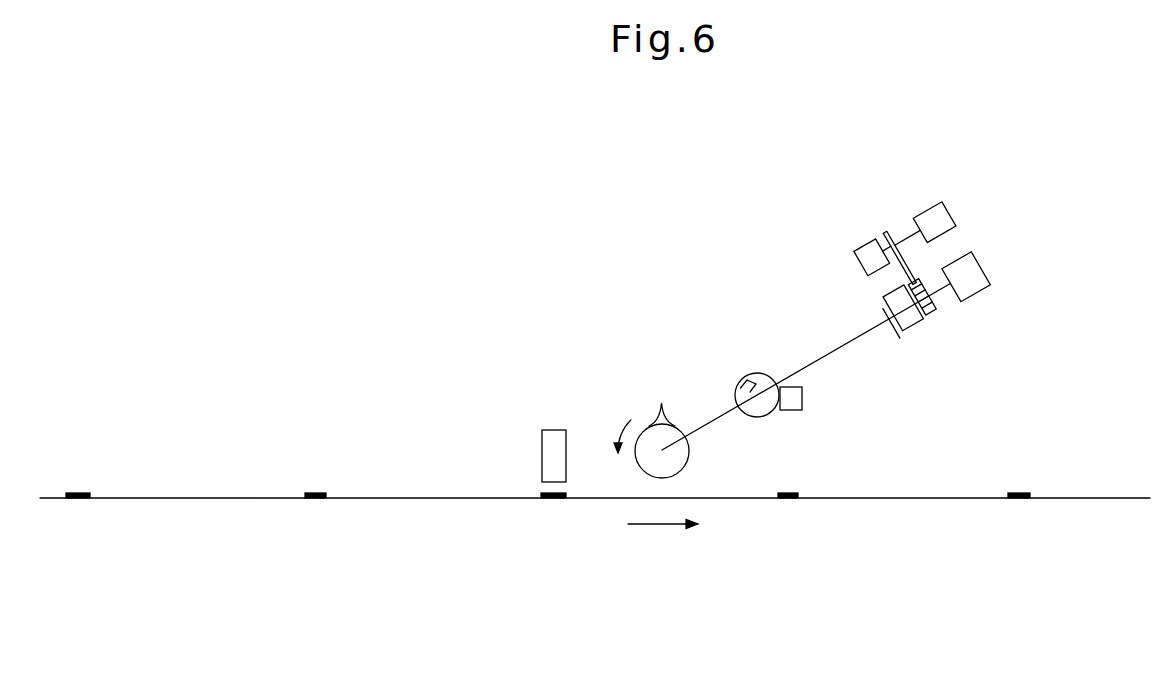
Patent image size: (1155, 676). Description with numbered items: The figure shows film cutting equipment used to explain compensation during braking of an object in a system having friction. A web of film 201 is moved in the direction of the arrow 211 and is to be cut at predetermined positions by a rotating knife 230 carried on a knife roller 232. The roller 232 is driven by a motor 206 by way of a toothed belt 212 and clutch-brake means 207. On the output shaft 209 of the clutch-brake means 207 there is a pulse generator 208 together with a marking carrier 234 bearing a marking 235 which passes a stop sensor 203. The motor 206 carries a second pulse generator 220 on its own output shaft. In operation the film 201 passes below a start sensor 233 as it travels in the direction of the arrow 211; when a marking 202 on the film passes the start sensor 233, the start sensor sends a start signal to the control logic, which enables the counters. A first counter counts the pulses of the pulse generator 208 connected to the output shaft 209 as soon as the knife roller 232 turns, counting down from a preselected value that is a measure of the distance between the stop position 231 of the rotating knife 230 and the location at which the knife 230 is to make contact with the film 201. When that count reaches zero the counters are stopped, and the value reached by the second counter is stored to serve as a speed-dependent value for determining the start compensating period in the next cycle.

The web of film 201 is at (161, 498).
The marking 202 is at (308, 507).
The stop sensor 203 is at (803, 393).
The motor 206 is at (862, 250).
The clutch-brake means 207 is at (912, 328).
The pulse generator 208 is at (973, 278).
The output shaft 209 is at (857, 337).
The arrow 211 is at (656, 525).
The toothed belt 212 is at (921, 260).
The second pulse generator 220 is at (932, 217).
The rotating knife 230 is at (645, 400).
The stop position 231 is at (662, 378).
The knife roller 232 is at (668, 460).
The start sensor 233 is at (555, 463).
The marking carrier 234 is at (760, 412).
The marking 235 is at (745, 373).